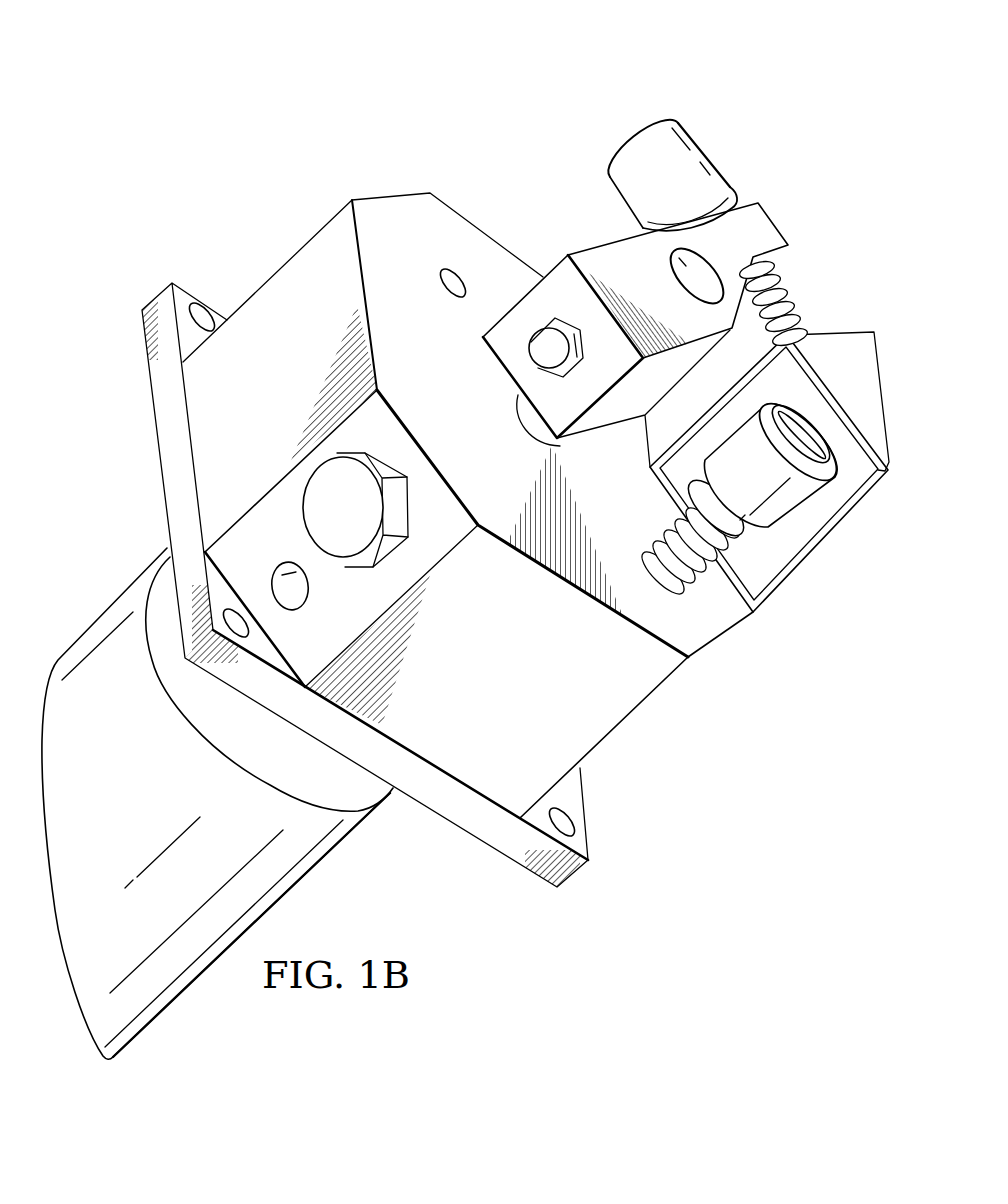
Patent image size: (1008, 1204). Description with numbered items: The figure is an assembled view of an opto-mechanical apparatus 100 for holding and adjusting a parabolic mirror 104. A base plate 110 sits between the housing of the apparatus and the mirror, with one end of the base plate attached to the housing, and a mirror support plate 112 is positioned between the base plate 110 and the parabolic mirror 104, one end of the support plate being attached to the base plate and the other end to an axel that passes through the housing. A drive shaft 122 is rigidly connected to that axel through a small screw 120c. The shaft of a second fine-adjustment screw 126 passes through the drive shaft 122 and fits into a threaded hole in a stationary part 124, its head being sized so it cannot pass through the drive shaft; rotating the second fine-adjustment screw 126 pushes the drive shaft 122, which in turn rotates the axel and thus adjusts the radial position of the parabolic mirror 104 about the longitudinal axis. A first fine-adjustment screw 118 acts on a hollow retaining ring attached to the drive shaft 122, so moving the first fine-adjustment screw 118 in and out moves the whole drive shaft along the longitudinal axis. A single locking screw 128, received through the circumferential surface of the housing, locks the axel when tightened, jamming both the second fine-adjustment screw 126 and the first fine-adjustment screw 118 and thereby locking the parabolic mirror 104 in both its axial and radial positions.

The opto-mechanical apparatus 100 is at (550, 68).
The parabolic mirror 104 is at (98, 633).
The base plate 110 is at (157, 297).
The mirror support plate 112 is at (210, 732).
The first fine-adjustment screw 118 is at (672, 531).
The small screw 120c is at (541, 352).
The drive shaft 122 is at (603, 246).
The stationary part 124 is at (848, 342).
The second fine-adjustment screw 126 is at (713, 158).
The locking screw 128 is at (304, 522).